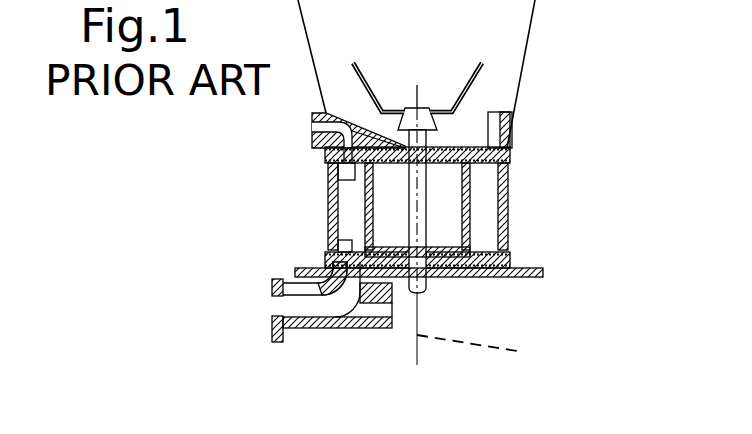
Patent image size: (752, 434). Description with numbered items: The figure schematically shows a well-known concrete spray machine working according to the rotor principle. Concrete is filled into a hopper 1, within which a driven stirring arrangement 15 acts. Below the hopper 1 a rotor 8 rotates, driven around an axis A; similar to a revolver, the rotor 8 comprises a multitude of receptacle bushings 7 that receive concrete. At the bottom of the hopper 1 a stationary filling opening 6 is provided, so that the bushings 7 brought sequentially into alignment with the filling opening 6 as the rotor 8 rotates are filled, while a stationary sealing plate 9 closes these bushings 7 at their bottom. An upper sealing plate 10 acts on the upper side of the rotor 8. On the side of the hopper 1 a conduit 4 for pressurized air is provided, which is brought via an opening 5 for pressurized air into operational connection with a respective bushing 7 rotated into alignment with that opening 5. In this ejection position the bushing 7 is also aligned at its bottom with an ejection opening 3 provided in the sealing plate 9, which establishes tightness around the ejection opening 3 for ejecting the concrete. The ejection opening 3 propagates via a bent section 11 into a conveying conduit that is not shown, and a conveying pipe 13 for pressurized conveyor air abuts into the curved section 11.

The hopper 1 is at (420, 47).
The ejection opening 3 is at (352, 262).
The conduit for pressurized air 4 is at (305, 128).
The opening for pressurized air 5 is at (350, 180).
The filling opening 6 is at (488, 113).
The receptacle bushings 7 is at (352, 226).
The rotor 8 is at (505, 218).
The stationary sealing plate 9 is at (543, 268).
The upper sealing plate 10 is at (505, 152).
The bent section 11 is at (275, 330).
The conveying pipe 13 is at (378, 312).
The stirring arrangement 15 is at (484, 66).
The axis A is at (477, 351).